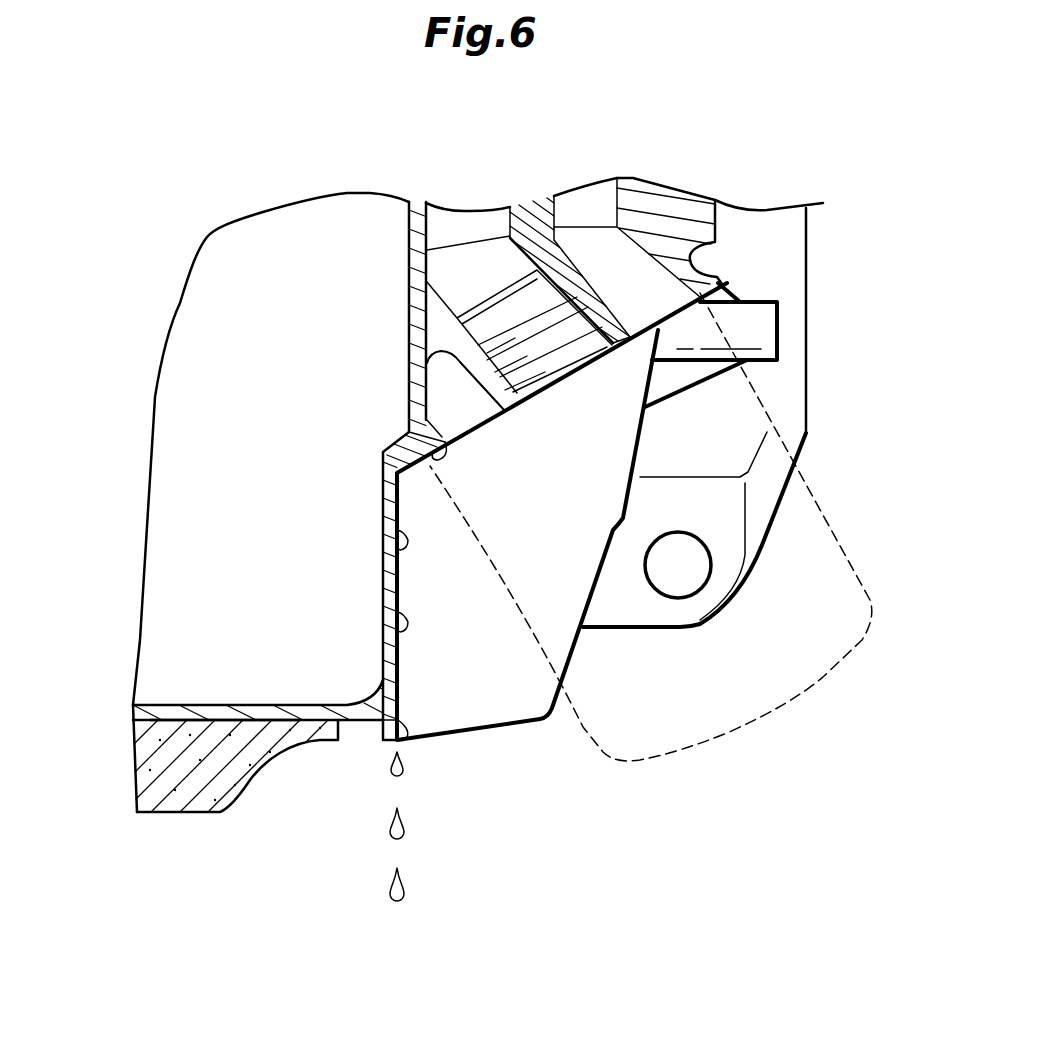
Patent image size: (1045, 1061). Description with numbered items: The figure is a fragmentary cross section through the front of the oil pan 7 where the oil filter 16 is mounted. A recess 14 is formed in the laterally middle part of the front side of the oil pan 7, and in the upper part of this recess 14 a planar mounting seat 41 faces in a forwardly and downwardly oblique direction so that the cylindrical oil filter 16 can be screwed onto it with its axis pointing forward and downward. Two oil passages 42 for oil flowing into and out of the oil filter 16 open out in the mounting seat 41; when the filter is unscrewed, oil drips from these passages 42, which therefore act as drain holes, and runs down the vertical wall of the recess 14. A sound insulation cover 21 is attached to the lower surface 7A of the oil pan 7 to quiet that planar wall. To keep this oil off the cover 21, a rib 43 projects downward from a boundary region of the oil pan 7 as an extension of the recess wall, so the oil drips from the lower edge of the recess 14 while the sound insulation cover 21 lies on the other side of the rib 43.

The oil pan 7 is at (133, 707).
The lower surface of the oil pan 7A is at (190, 720).
The recess 14 is at (486, 646).
The oil filter 16 is at (843, 548).
The sound insulation cover 21 is at (181, 795).
The mounting seat 41 is at (508, 408).
The oil passages 42 is at (430, 222).
The rib 43 is at (382, 727).